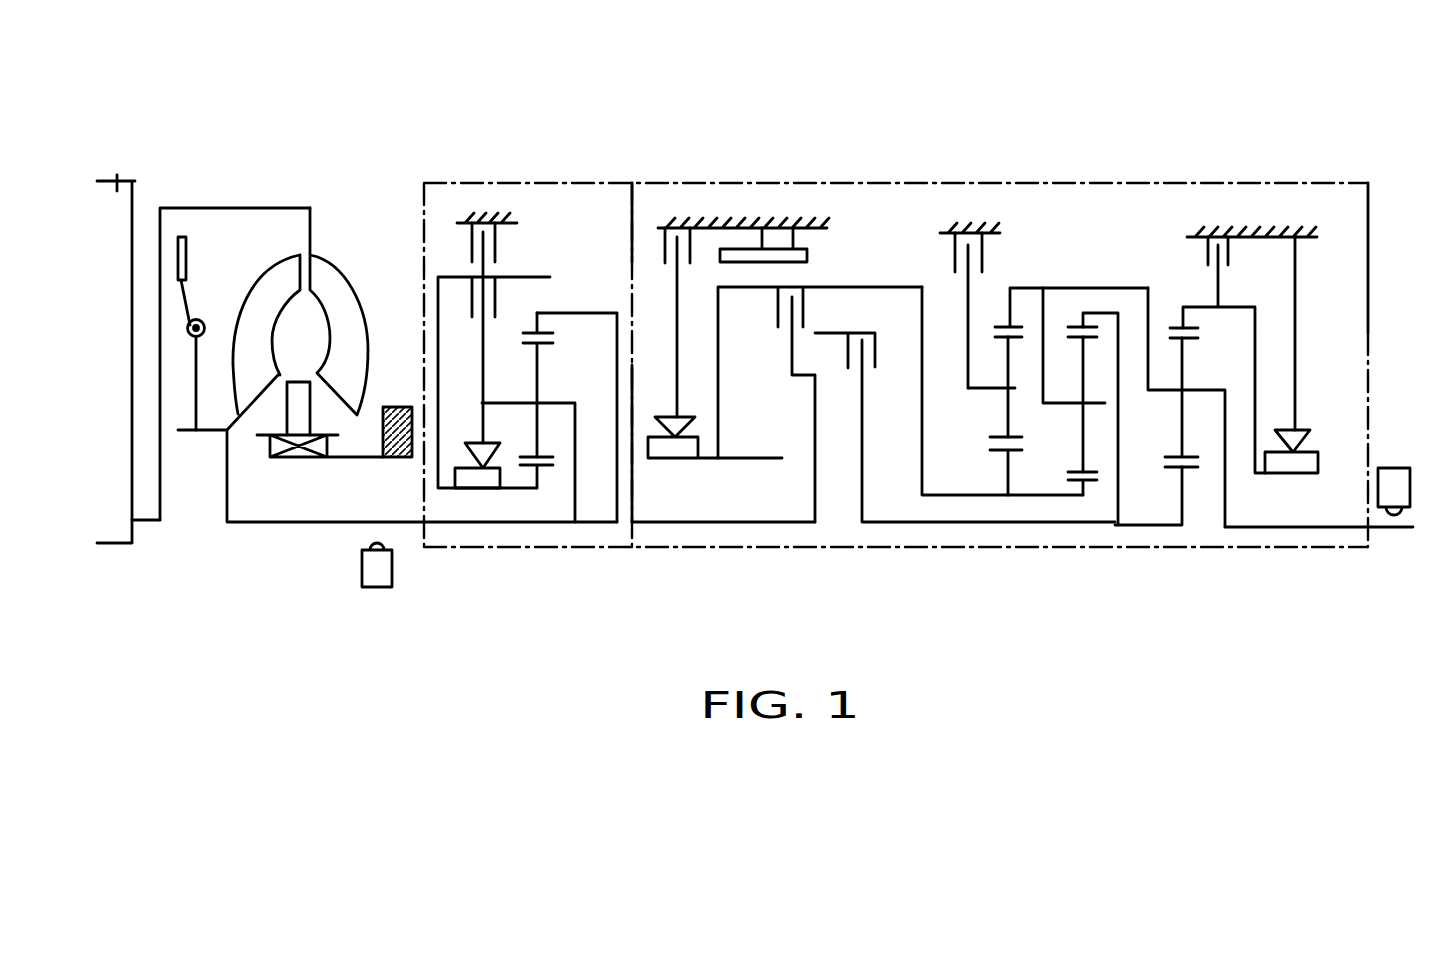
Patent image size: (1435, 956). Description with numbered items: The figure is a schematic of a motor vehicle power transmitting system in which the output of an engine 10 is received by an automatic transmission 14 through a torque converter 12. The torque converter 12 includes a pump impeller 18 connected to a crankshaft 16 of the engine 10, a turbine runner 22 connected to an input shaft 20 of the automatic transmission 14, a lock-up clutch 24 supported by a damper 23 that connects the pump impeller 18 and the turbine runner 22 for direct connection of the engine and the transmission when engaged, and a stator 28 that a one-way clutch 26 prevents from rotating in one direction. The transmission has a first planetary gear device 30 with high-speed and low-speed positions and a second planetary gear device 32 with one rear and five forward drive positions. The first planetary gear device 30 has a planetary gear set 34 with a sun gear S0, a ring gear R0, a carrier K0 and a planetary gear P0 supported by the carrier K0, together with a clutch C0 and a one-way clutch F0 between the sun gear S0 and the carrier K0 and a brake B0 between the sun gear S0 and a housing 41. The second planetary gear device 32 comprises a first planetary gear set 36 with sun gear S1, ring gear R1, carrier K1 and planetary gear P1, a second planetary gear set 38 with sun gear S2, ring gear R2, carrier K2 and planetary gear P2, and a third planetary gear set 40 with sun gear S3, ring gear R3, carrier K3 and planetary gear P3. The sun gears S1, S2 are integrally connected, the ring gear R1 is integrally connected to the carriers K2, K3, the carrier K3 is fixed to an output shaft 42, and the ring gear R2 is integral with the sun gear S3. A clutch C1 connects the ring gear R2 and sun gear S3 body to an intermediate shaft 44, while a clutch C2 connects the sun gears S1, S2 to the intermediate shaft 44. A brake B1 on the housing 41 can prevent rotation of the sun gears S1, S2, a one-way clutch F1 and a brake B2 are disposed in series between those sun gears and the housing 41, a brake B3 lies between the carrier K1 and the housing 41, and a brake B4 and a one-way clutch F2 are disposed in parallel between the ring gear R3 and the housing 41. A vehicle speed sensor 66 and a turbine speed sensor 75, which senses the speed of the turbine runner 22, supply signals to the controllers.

The engine 10 is at (117, 178).
The torque converter 12 is at (268, 286).
The automatic transmission 14 is at (880, 139).
The crankshaft 16 is at (147, 522).
The pump impeller 18 is at (337, 297).
The input shaft 20 is at (343, 522).
The turbine runner 22 is at (277, 278).
The damper 23 is at (203, 323).
The lock-up clutch 24 is at (177, 240).
The one-way clutch 26 is at (297, 457).
The stator 28 is at (293, 397).
The first planetary gear device 30 is at (538, 180).
The second planetary gear device 32 is at (1183, 183).
The planetary gear set 34 is at (524, 442).
The first planetary gear set 36 is at (1035, 424).
The second planetary gear set 38 is at (1065, 424).
The third planetary gear set 40 is at (1190, 435).
The housing 41 is at (402, 437).
The output shaft 42 is at (1342, 528).
The intermediate shaft 44 is at (782, 523).
The vehicle speed sensor 66 is at (1392, 478).
The turbine speed sensor 75 is at (373, 578).
The brake B0 is at (472, 243).
The brake B1 is at (793, 250).
The brake B2 is at (663, 247).
The brake B3 is at (955, 253).
The brake B4 is at (1230, 247).
The clutch C0 is at (472, 297).
The clutch C1 is at (877, 350).
The clutch C2 is at (778, 300).
The one-way clutch F0 is at (468, 486).
The one-way clutch F1 is at (678, 458).
The one-way clutch F2 is at (1290, 473).
The ring gear R0 is at (537, 333).
The ring gear R1 is at (1015, 325).
The ring gear R2 is at (1077, 327).
The ring gear R3 is at (1175, 327).
The sun gear S0 is at (528, 453).
The sun gear S1 is at (1000, 452).
The sun gear S2 is at (1077, 483).
The sun gear S3 is at (1175, 470).
The planetary gear P0 is at (532, 345).
The planetary gear P1 is at (1004, 337).
The planetary gear P2 is at (1075, 468).
The planetary gear P3 is at (1173, 453).
The carrier K0 is at (558, 402).
The carrier K1 is at (997, 393).
The carrier K2 is at (1067, 403).
The carrier K3 is at (1202, 390).